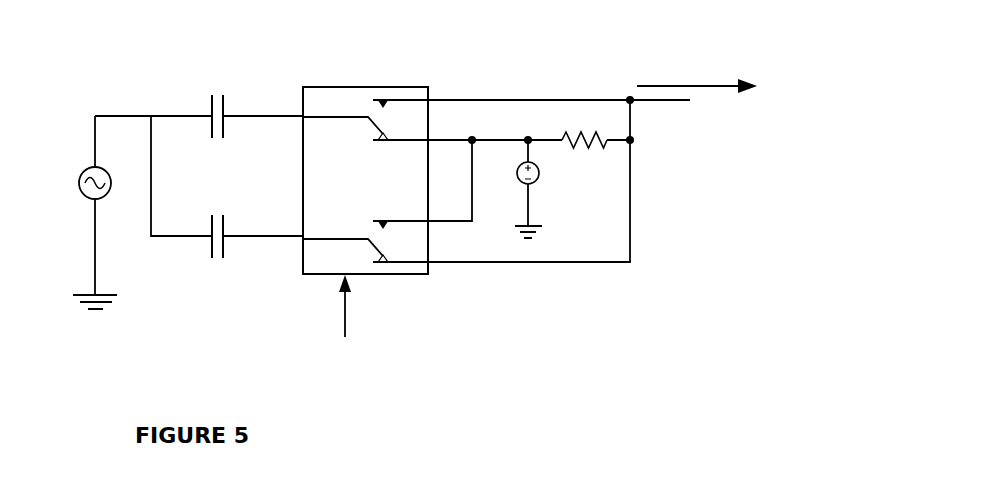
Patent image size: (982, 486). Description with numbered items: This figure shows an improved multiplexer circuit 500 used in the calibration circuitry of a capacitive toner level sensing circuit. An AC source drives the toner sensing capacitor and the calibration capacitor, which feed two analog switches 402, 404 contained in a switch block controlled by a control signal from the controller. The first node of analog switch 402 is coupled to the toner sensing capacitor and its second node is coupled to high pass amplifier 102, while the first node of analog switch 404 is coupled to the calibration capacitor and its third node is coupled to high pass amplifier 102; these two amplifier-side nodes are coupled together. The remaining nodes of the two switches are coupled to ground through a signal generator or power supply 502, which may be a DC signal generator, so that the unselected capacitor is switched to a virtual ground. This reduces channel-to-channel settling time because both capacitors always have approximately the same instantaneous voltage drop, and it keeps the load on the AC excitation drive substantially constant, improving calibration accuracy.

The multiplexer circuit 500 is at (400, 201).
The analog switch 402 is at (375, 152).
The analog switch 404 is at (369, 212).
The signal generator or power supply 502 is at (550, 190).
The high pass amplifier 102 is at (696, 64).